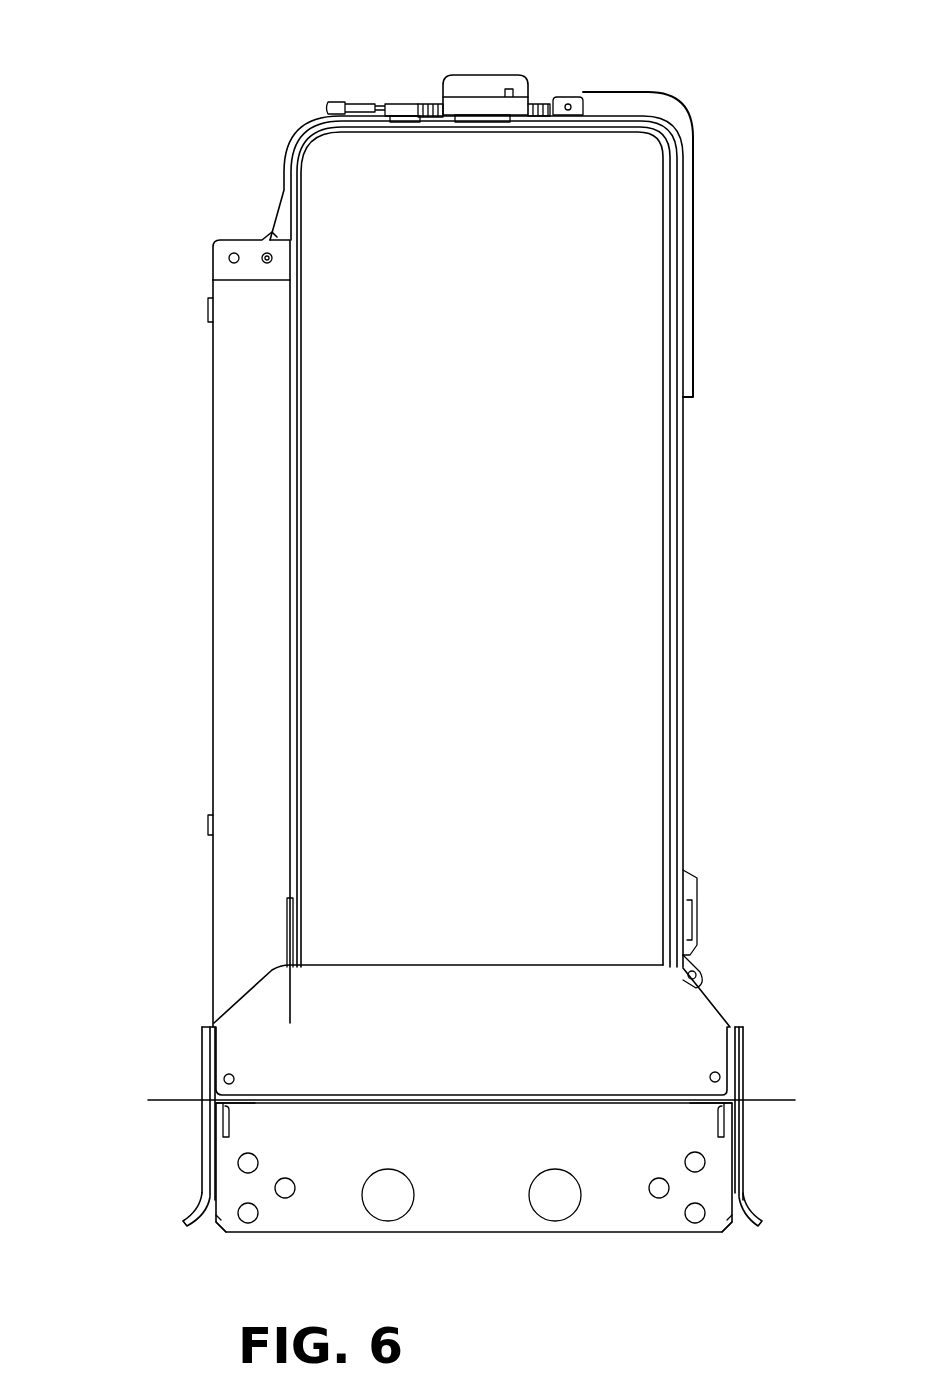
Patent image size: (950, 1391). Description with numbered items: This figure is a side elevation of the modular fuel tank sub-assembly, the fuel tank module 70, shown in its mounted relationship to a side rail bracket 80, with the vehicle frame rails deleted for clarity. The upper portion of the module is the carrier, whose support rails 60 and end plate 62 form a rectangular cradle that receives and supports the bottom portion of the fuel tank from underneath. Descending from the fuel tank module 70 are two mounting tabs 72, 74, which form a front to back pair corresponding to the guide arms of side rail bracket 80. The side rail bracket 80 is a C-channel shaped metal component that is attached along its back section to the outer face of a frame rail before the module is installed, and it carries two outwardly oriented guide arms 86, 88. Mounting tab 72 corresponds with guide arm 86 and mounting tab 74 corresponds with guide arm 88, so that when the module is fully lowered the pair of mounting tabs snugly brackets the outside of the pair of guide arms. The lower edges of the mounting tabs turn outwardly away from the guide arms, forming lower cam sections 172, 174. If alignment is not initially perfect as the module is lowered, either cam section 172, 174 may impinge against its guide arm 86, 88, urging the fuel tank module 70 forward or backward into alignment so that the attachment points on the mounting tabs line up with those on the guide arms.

The fuel tank module 70 is at (692, 84).
The end plate 62 is at (441, 979).
The support rail 60 is at (202, 1052).
The mounting tab 72 is at (200, 1166).
The mounting tab 74 is at (743, 1162).
The lower cam section 172 is at (183, 1220).
The lower cam section 174 is at (762, 1213).
The side rail bracket 80 is at (465, 1213).
The guide arm 86 is at (210, 1230).
The guide arm 88 is at (720, 1233).